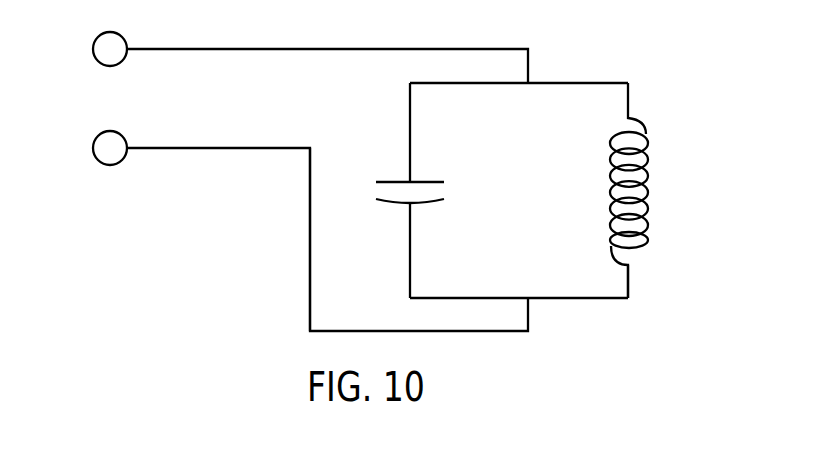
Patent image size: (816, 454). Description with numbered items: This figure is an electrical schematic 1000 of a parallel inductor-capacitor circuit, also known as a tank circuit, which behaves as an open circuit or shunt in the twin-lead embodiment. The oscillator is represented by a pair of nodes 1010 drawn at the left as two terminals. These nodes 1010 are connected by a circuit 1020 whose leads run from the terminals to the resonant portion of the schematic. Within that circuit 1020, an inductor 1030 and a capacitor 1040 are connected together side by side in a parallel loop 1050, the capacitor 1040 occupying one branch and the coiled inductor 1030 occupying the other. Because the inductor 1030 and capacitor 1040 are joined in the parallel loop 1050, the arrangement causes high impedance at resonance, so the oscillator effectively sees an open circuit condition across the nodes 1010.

The electrical schematic 1000 is at (636, 54).
The nodes 1010 is at (94, 72).
The circuit 1020 is at (291, 242).
The inductor 1030 is at (669, 159).
The capacitor 1040 is at (460, 195).
The parallel loop 1050 is at (646, 293).